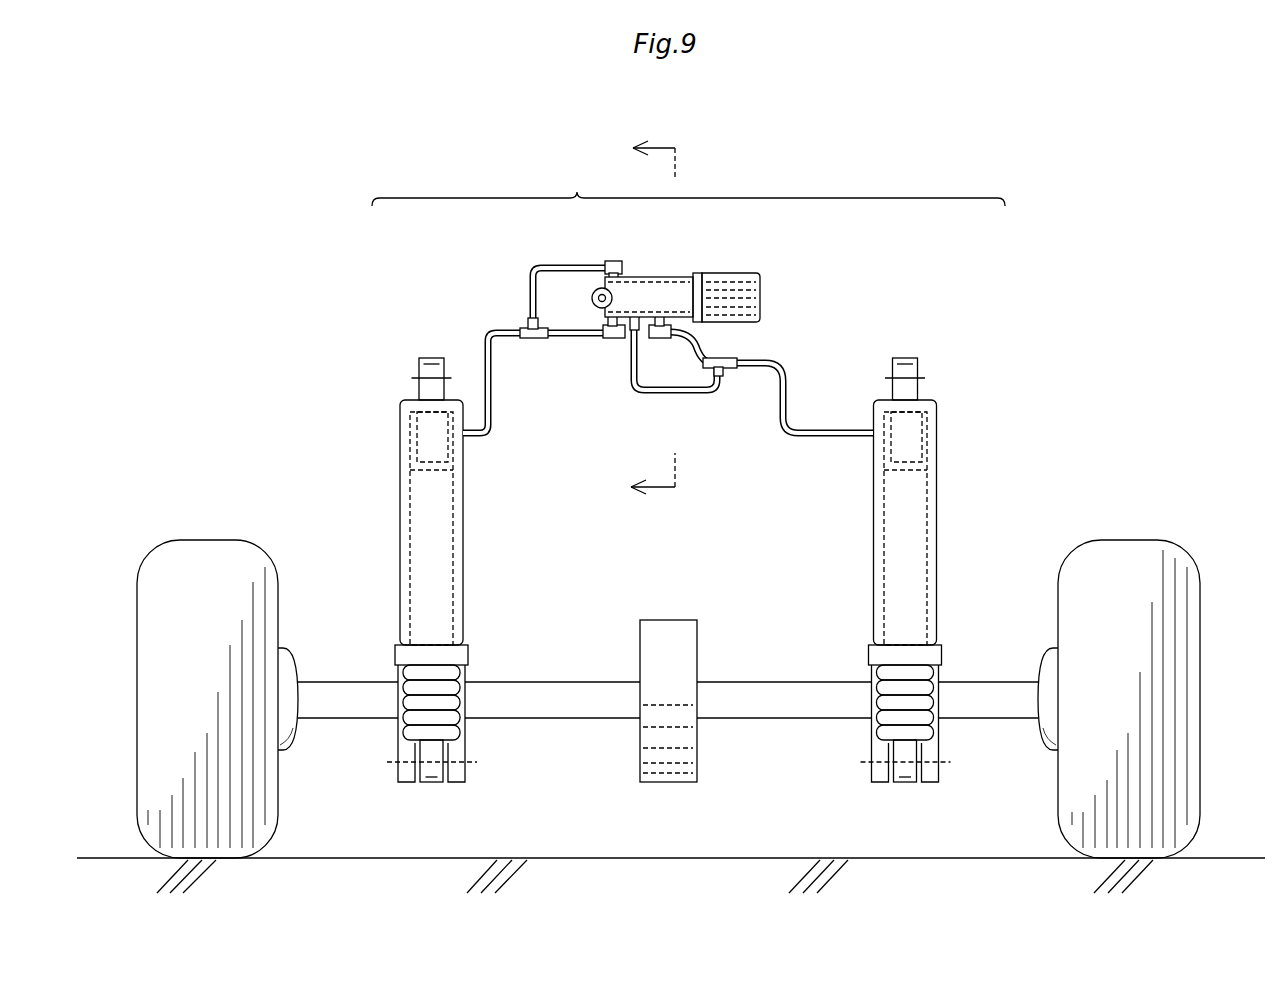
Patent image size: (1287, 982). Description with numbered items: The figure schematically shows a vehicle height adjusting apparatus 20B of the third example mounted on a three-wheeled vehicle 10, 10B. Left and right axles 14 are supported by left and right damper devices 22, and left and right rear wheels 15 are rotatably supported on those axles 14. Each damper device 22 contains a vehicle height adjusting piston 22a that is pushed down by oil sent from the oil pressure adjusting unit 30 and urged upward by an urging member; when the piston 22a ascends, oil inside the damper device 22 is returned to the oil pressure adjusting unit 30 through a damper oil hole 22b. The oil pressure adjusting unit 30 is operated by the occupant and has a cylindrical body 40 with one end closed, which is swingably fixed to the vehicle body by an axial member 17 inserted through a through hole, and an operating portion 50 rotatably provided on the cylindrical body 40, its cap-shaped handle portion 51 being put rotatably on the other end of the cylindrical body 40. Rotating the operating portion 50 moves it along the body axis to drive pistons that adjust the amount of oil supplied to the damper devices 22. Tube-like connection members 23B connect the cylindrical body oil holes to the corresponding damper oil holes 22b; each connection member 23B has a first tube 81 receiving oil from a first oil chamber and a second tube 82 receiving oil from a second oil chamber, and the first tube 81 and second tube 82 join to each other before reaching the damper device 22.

The three-wheeled vehicle 10 is at (682, 328).
The three-wheeled vehicle 10B is at (1115, 290).
The axle 14 is at (548, 703).
The rear wheel 15 is at (203, 540).
The axial member 17 is at (591, 298).
The vehicle height adjusting apparatus 20B is at (688, 183).
The damper device 22 is at (400, 398).
The vehicle height adjusting piston 22a is at (427, 473).
The damper oil hole 22b is at (462, 418).
The connection member 23B is at (485, 338).
The oil pressure adjusting unit 30 is at (673, 315).
The cylindrical body 40 is at (663, 300).
The operating portion 50 is at (748, 347).
The handle portion 51 is at (756, 339).
The first tube 81 is at (578, 339).
The second tube 82 is at (528, 293).